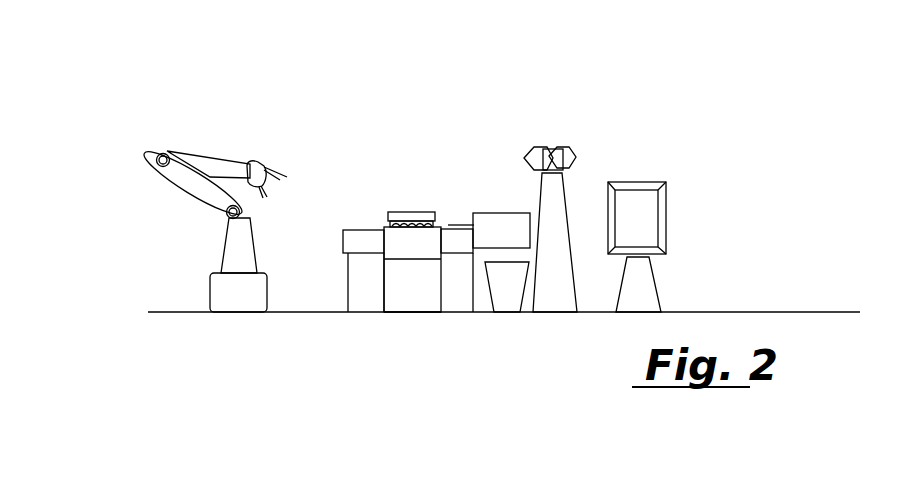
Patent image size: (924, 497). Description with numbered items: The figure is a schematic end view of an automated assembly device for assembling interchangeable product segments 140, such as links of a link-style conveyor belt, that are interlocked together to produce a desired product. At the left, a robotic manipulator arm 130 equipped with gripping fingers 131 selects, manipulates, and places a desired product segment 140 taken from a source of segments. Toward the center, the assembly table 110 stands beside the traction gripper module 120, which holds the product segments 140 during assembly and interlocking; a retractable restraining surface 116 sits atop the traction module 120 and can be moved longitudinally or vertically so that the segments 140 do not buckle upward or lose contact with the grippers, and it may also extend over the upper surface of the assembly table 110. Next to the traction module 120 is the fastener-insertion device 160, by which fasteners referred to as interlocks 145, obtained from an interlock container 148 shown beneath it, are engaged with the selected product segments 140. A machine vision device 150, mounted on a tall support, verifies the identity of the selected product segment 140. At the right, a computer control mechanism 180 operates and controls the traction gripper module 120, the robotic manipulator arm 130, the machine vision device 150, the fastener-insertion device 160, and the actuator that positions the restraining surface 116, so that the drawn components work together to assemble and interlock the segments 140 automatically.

The assembly table 110 is at (368, 240).
The restraining surface 116 is at (407, 212).
The traction gripper module 120 is at (418, 248).
The robotic manipulator arm 130 is at (192, 175).
The gripping fingers 131 is at (267, 168).
The product segment 140 is at (413, 228).
The interlock 145 is at (455, 222).
The interlock container 148 is at (505, 297).
The machine vision device 150 is at (565, 152).
The fastener-insertion device 160 is at (486, 226).
The computer control mechanism 180 is at (642, 218).